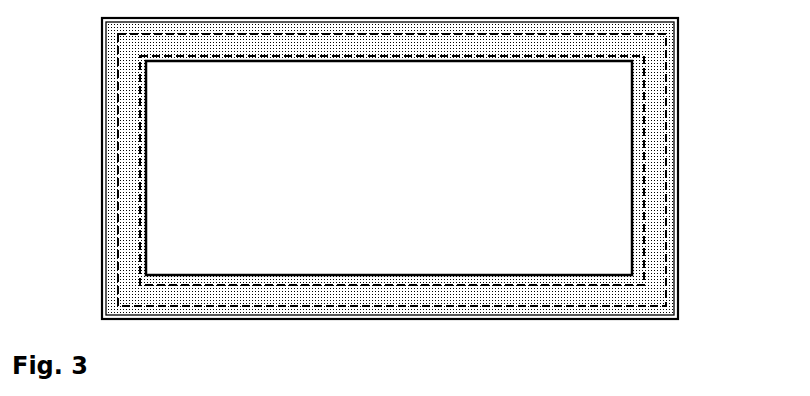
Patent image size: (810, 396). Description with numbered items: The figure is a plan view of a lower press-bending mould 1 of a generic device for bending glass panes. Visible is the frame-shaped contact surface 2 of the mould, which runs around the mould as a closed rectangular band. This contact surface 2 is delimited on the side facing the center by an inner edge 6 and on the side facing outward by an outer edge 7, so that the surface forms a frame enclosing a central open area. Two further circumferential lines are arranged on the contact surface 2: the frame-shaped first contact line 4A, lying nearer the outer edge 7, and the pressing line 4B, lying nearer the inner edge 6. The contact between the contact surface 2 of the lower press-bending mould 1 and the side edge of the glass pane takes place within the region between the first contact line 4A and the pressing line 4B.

The lower press-bending mould 1 is at (680, 288).
The contact surface 2 is at (670, 252).
The first contact line 4A is at (665, 165).
The pressing line 4B is at (641, 208).
The inner edge 6 is at (631, 132).
The outer edge 7 is at (675, 80).